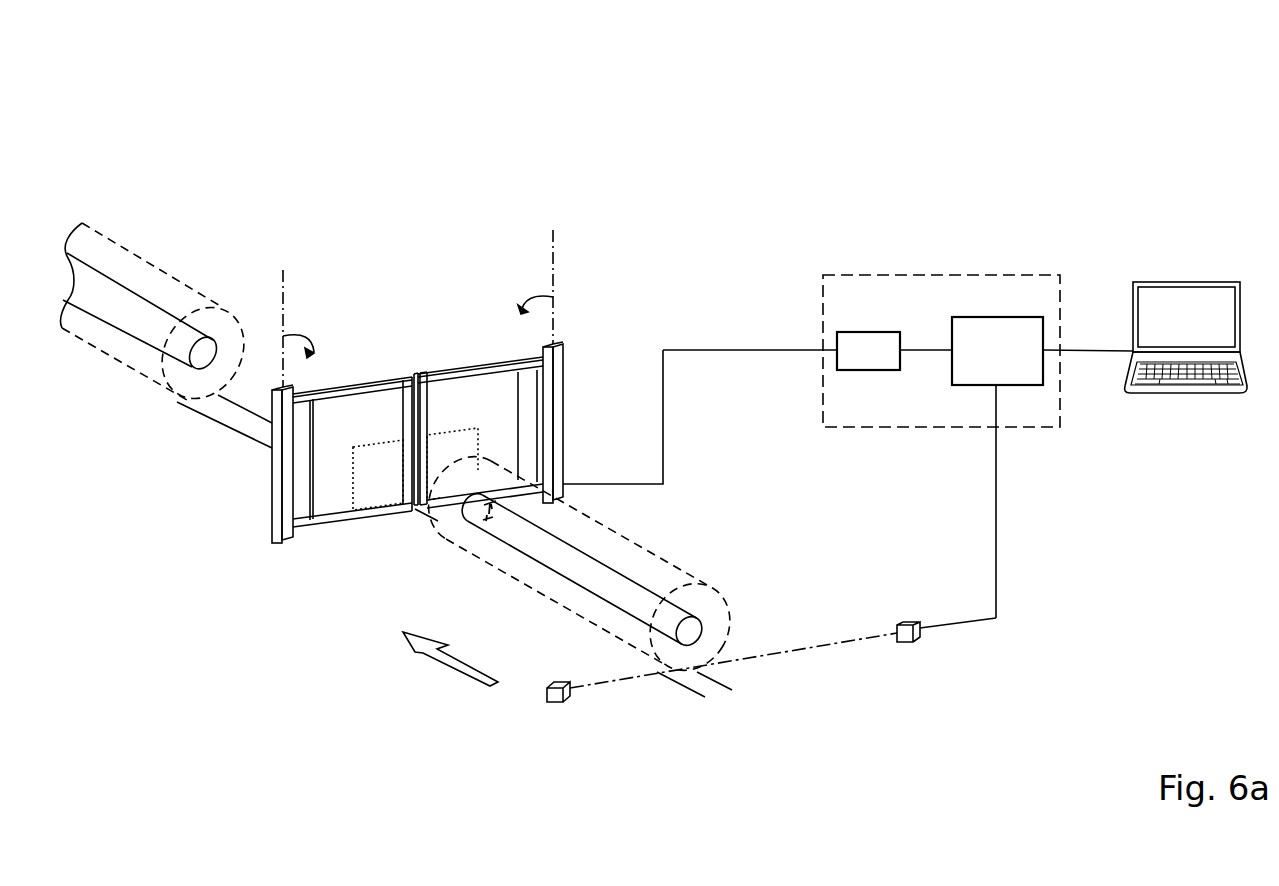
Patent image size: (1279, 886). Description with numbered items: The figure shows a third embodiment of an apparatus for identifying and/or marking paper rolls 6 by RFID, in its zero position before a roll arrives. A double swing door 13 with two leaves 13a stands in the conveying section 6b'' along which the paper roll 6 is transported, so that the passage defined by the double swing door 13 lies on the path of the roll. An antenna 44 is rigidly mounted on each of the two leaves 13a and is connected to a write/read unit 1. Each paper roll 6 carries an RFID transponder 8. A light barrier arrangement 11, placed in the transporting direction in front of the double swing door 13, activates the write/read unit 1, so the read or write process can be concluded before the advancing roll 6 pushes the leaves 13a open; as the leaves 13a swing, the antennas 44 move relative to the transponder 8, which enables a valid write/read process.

The write/read unit 1 is at (942, 275).
The paper roll 6 is at (587, 571).
The conveying section 6b'' is at (722, 667).
The RFID transponder 8 is at (478, 522).
The light barrier arrangement 11 is at (913, 643).
The double swing door 13 is at (451, 422).
The leaf of double swing door 13a is at (500, 412).
The antenna 44 is at (394, 486).